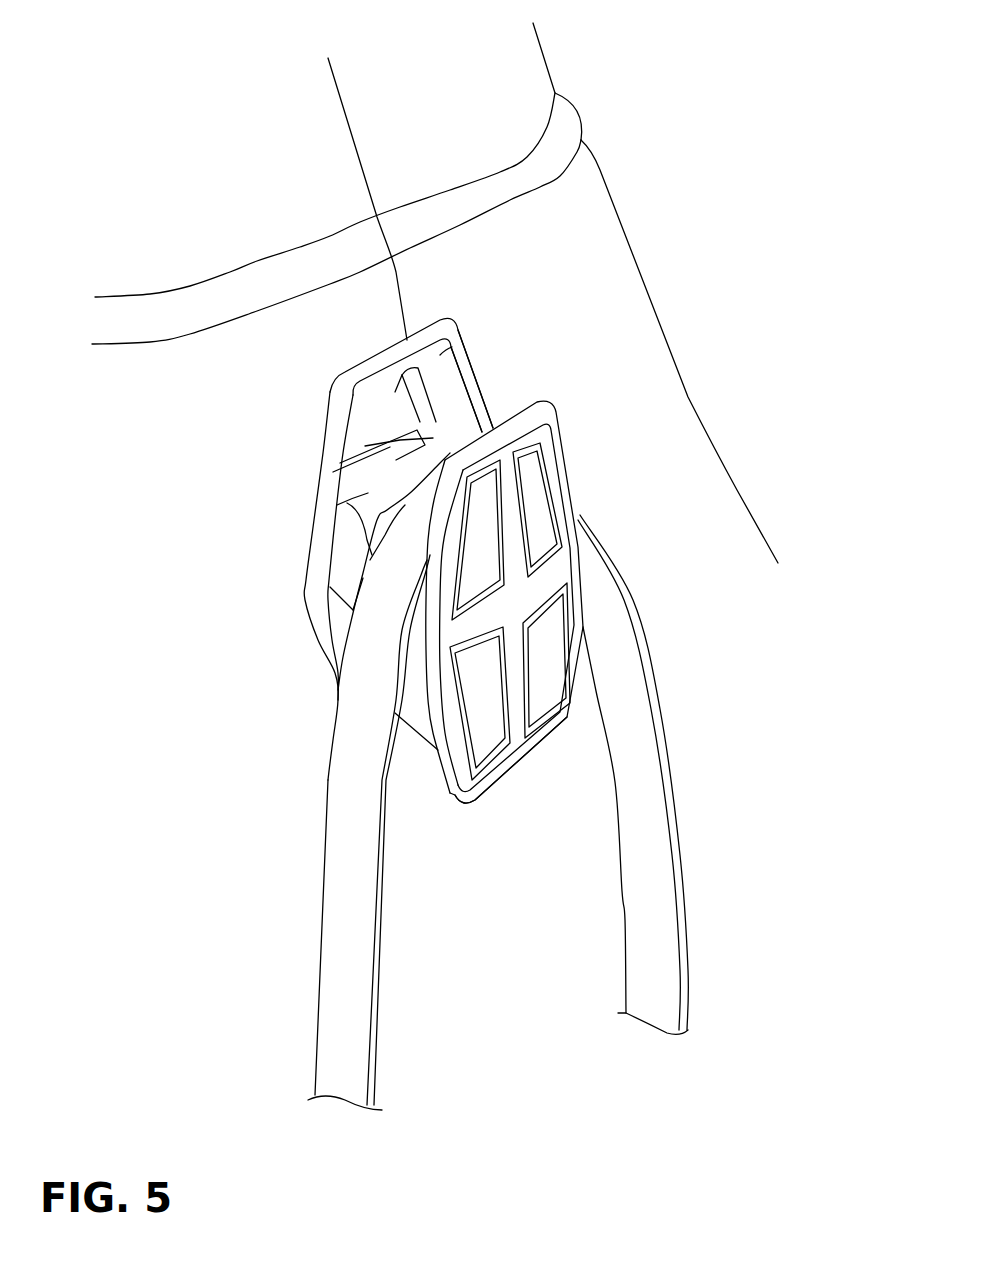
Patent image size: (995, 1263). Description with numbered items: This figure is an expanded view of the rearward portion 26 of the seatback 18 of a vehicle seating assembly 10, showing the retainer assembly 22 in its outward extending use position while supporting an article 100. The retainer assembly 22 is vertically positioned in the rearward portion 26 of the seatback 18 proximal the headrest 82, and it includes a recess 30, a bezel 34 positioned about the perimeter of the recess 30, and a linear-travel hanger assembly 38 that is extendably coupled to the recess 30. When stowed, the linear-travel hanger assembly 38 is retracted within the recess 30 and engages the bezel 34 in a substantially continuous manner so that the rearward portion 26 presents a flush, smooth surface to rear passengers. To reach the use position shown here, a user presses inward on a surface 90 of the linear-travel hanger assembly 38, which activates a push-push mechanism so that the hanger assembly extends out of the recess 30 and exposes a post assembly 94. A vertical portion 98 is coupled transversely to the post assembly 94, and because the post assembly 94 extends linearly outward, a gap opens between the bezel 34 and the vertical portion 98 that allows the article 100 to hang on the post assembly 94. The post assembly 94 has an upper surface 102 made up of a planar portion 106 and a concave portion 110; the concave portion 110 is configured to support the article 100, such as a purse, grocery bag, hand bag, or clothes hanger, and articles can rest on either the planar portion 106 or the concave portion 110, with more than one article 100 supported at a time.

The vehicle seating assembly 10 is at (667, 122).
The seatback 18 is at (688, 397).
The retainer assembly 22 is at (493, 423).
The rearward portion 26 is at (662, 457).
The recess 30 is at (433, 438).
The bezel 34 is at (327, 658).
The linear-travel hanger assembly 38 is at (347, 565).
The headrest 82 is at (477, 83).
The surface 90 is at (513, 597).
The post assembly 94 is at (366, 475).
The vertical portion 98 is at (470, 787).
The article 100 is at (352, 880).
The upper surface 102 is at (355, 491).
The planar portion 106 is at (502, 398).
The concave portion 110 is at (365, 446).